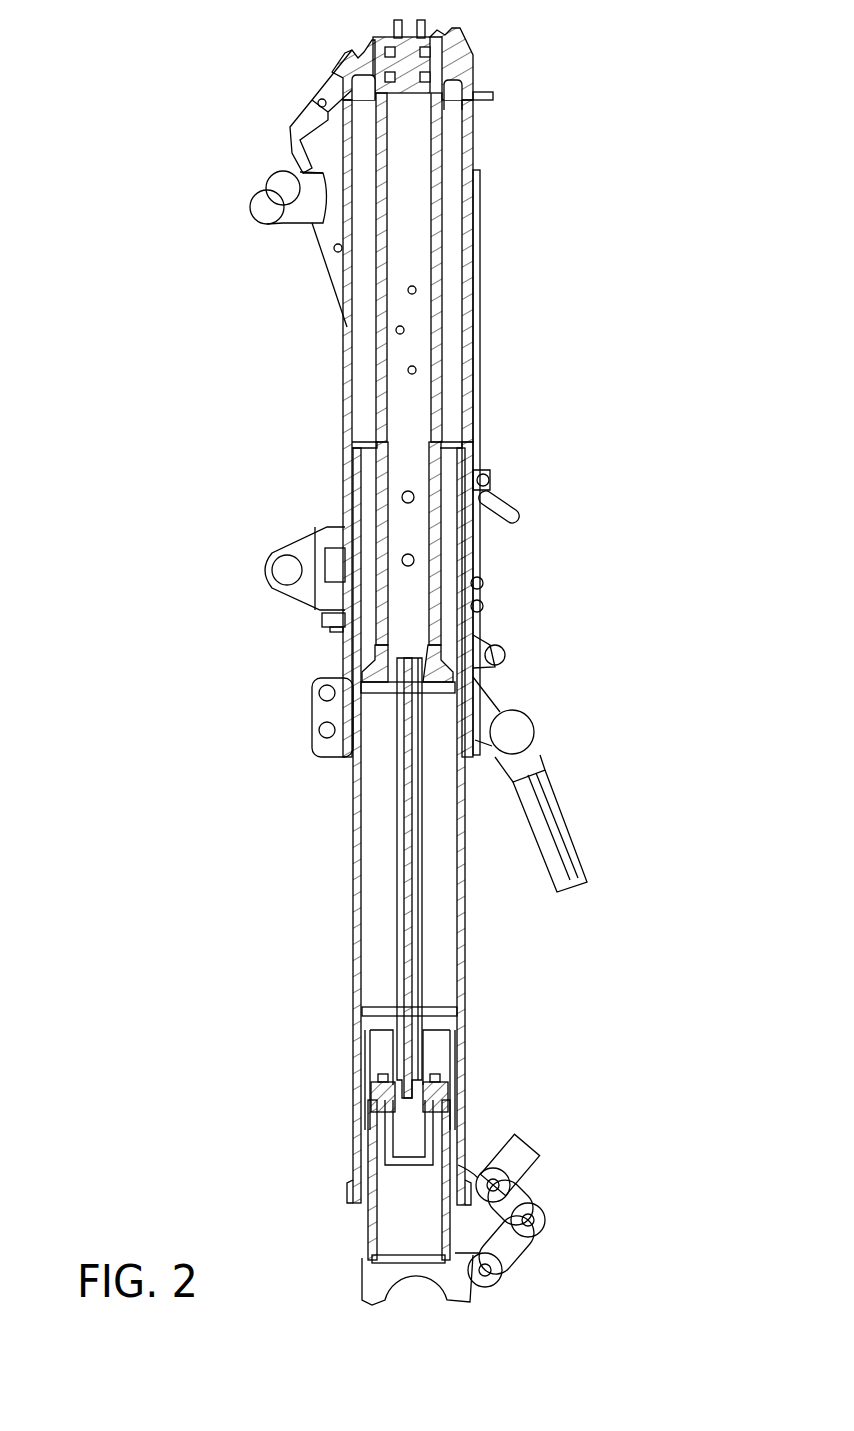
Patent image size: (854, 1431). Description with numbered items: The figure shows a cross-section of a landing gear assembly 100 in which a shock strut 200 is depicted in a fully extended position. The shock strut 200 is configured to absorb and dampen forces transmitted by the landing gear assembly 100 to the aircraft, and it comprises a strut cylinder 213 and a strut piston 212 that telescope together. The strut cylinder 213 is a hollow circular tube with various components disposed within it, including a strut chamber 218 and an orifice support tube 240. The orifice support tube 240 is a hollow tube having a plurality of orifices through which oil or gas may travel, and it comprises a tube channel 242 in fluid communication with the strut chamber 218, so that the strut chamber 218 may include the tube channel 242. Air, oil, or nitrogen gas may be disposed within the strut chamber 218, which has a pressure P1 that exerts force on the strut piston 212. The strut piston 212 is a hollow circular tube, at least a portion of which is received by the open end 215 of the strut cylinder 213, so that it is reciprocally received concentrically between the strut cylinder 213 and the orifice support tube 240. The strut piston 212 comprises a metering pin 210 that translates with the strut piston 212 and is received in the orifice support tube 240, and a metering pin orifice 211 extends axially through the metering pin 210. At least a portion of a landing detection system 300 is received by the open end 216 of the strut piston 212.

The landing gear assembly 100 is at (172, 352).
The shock strut 200 is at (352, 412).
The strut cylinder 213 is at (470, 394).
The strut chamber 218 is at (448, 212).
The pressure of strut chamber P1 is at (452, 187).
The tube channel 242 is at (418, 262).
The orifice support tube 240 is at (440, 560).
The open end of strut cylinder 215 is at (342, 800).
The strut piston 212 is at (465, 920).
The metering pin 210 is at (418, 820).
The metering pin orifice 211 is at (404, 942).
The open end of strut piston 216 is at (356, 1222).
The landing detection system 300 is at (603, 1188).